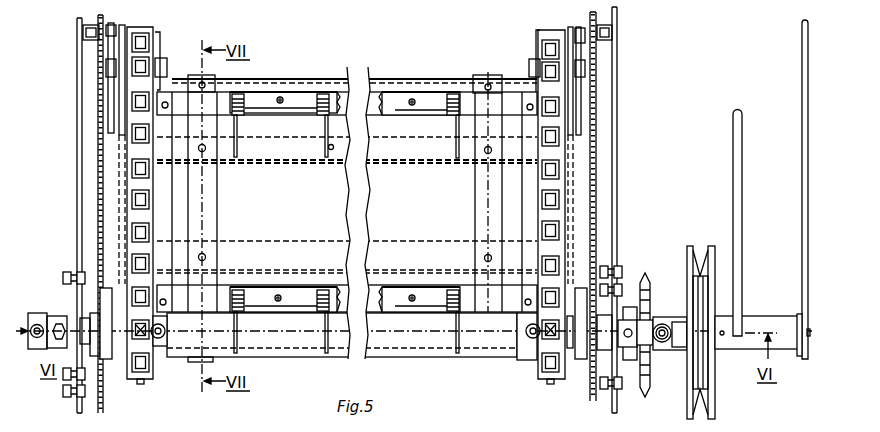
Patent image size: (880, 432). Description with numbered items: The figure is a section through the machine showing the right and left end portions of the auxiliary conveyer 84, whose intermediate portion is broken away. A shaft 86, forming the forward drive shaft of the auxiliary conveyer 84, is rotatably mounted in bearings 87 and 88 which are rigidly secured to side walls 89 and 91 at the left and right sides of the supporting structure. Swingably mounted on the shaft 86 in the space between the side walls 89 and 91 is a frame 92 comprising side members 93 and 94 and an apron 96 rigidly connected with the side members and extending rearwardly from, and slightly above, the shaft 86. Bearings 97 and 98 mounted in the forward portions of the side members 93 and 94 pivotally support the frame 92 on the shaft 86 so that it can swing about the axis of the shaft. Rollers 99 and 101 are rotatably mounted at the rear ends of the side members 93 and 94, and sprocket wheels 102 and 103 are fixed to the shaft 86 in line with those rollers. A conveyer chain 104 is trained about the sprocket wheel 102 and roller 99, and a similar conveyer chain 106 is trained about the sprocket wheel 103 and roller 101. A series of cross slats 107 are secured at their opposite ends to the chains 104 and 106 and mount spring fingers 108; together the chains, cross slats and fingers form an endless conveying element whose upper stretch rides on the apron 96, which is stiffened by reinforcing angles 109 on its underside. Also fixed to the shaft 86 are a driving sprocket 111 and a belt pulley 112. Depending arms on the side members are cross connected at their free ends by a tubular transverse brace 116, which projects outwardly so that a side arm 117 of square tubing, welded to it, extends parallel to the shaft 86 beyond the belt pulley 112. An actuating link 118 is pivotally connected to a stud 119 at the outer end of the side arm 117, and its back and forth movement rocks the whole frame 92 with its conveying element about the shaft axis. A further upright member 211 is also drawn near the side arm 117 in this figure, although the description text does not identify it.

The auxiliary conveyer 84 is at (361, 65).
The shaft 86 is at (683, 327).
The bearing 87 is at (628, 318).
The bearing 88 is at (58, 316).
The side wall 89 is at (616, 213).
The side wall 91 is at (77, 236).
The frame 92 is at (380, 214).
The side member 93 is at (581, 128).
The side member 94 is at (110, 118).
The apron 96 is at (119, 203).
The bearing 97 is at (585, 355).
The bearing 98 is at (107, 359).
The roller 99 is at (537, 40).
The roller 101 is at (160, 44).
The sprocket wheel 102 is at (548, 372).
The sprocket wheel 103 is at (142, 378).
The conveyer chain 104 is at (562, 203).
The conveyer chain 106 is at (128, 174).
The cross slat 107 is at (234, 98).
The spring finger 108 is at (328, 146).
The reinforcing angle 109 is at (370, 165).
The driving sprocket 111 is at (643, 397).
The belt pulley 112 is at (714, 406).
The tubular transverse brace 116 is at (163, 350).
The side arm 117 is at (772, 319).
The actuating link 118 is at (802, 233).
The stud 119 is at (808, 343).
The arm 211 is at (742, 192).